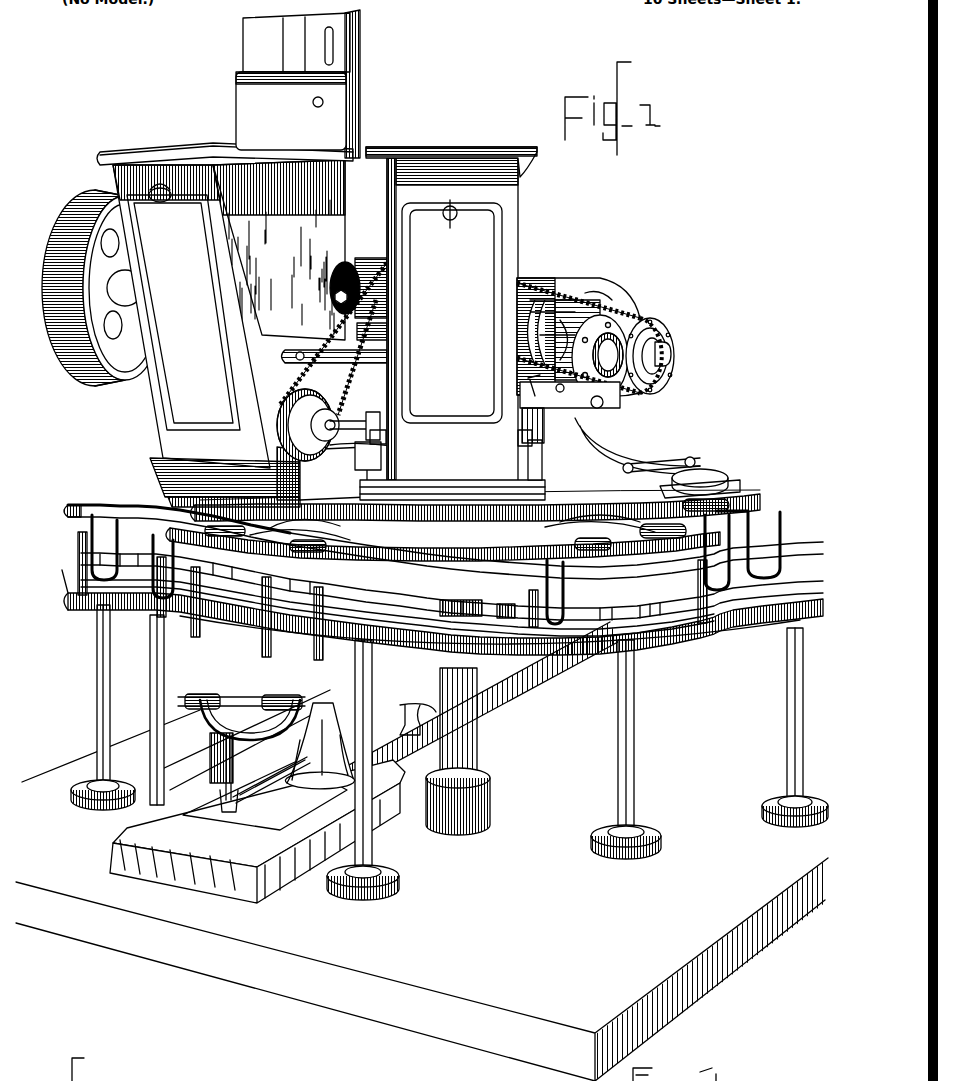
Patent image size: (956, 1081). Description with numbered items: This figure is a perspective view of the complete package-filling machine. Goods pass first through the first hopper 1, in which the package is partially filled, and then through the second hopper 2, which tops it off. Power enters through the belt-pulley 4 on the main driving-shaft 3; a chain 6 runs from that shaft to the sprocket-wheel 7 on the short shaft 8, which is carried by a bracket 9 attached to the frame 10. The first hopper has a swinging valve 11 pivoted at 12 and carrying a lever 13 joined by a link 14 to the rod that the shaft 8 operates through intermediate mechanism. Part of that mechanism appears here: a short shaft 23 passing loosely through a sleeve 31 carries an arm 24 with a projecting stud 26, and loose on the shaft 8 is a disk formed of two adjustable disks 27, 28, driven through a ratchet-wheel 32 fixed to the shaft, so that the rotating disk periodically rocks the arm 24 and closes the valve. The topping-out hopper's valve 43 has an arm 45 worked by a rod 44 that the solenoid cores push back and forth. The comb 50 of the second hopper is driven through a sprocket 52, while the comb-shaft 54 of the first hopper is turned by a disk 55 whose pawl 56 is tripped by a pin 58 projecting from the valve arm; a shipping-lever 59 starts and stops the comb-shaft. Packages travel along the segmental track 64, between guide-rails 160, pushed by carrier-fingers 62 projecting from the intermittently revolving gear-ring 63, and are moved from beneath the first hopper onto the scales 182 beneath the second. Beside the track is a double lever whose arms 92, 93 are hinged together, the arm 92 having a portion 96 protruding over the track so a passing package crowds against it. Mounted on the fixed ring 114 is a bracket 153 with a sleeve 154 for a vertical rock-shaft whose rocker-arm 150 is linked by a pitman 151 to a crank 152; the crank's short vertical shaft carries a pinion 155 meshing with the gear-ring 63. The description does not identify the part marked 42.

The first hopper 1 is at (452, 150).
The second hopper 2 is at (186, 150).
The main driving-shaft 3 is at (360, 258).
The belt-pulley 4 is at (56, 362).
The chain 6 is at (618, 335).
The sprocket-wheel 7 is at (658, 340).
The short shaft 8 is at (672, 352).
The bracket 9 is at (615, 410).
The frame 10 is at (582, 280).
The swinging valve 11 is at (465, 500).
The pivot 12 is at (380, 432).
The lever 13 is at (556, 388).
The link 14 is at (530, 380).
The short shaft 23 is at (598, 292).
The arm 24 is at (615, 318).
The stud 26 is at (540, 306).
The disk 27 is at (560, 328).
The disk 28 is at (655, 322).
The sleeve 31 is at (545, 300).
The ratchet-wheel 32 is at (540, 336).
The pipe 42 is at (553, 412).
The valve 43 is at (150, 472).
The rod 44 is at (362, 332).
The arm 45 is at (285, 365).
The comb 50 is at (330, 335).
The sprocket 52 is at (277, 412).
The comb-shaft 54 is at (355, 430).
The disk 55 is at (368, 444).
The pawl 56 is at (330, 442).
The pin 58 is at (372, 469).
The shipping-lever 59 is at (605, 410).
The carrier-fingers 62 is at (78, 508).
The gear-ring 63 is at (370, 524).
The segmental track 64 is at (600, 625).
The arm 92 is at (590, 642).
The arm 93 is at (527, 700).
The protruding portion 96 is at (395, 680).
The fixed ring 114 is at (548, 470).
The rocker-arm 150 is at (636, 456).
The pitman 151 is at (696, 458).
The crank 152 is at (728, 458).
The bracket 153 is at (685, 455).
The sleeve 154 is at (632, 460).
The pinion 155 is at (718, 488).
The guide-rails 160 is at (400, 600).
The scales 182 is at (222, 663).